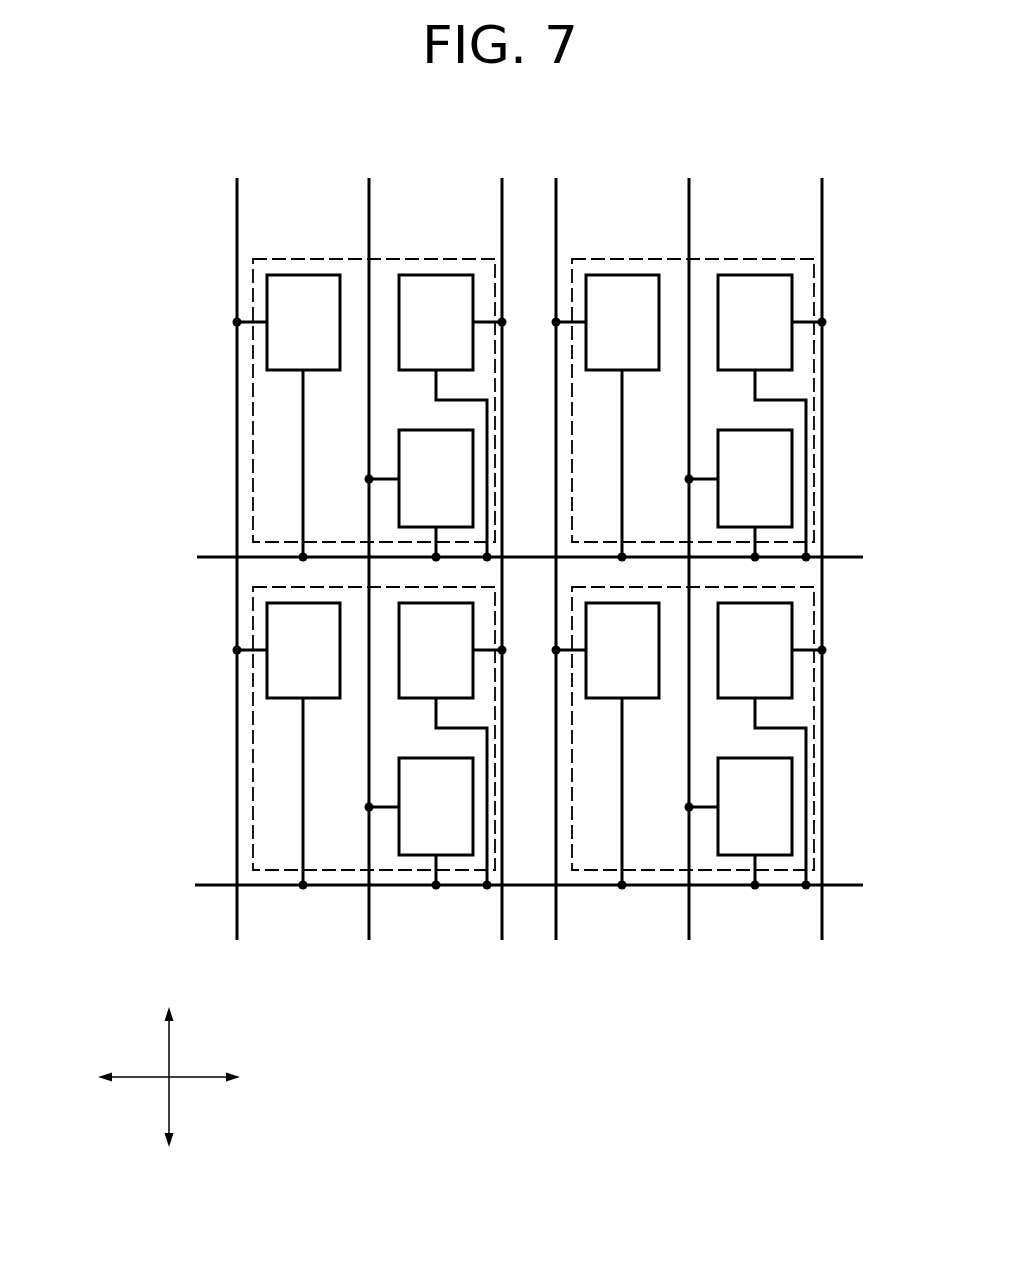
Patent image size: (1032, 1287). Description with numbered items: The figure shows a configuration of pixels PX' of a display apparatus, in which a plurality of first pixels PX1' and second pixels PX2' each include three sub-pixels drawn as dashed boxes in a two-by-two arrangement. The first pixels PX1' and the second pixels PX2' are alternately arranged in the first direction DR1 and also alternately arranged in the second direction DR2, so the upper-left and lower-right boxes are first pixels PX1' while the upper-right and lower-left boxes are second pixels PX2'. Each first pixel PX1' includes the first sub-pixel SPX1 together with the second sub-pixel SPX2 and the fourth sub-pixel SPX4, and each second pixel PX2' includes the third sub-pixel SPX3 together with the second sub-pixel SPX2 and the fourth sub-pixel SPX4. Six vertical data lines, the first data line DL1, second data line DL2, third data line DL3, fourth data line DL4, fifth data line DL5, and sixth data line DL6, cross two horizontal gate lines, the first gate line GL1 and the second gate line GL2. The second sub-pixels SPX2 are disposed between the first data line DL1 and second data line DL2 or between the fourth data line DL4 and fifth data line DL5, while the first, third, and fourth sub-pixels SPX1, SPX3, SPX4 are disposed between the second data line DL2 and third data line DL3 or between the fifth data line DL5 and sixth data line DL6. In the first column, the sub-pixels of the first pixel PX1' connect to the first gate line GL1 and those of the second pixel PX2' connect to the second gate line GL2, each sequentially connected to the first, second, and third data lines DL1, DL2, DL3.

The first data line DL1 is at (236, 543).
The second data line DL2 is at (369, 543).
The third data line DL3 is at (502, 543).
The fourth data line DL4 is at (557, 543).
The fifth data line DL5 is at (689, 543).
The sixth data line DL6 is at (822, 543).
The first gate line GL1 is at (502, 558).
The second gate line GL2 is at (503, 886).
The first sub-pixel SPX1 is at (436, 275).
The second sub-pixel SPX2 is at (303, 275).
The third sub-pixel SPX3 is at (755, 275).
The fourth sub-pixel SPX4 is at (399, 456).
The first pixel PX1' is at (504, 564).
The second pixel PX2' is at (504, 564).
The pixels PX' is at (47, 563).
The first direction DR1 is at (190, 1078).
The second direction DR2 is at (170, 1062).